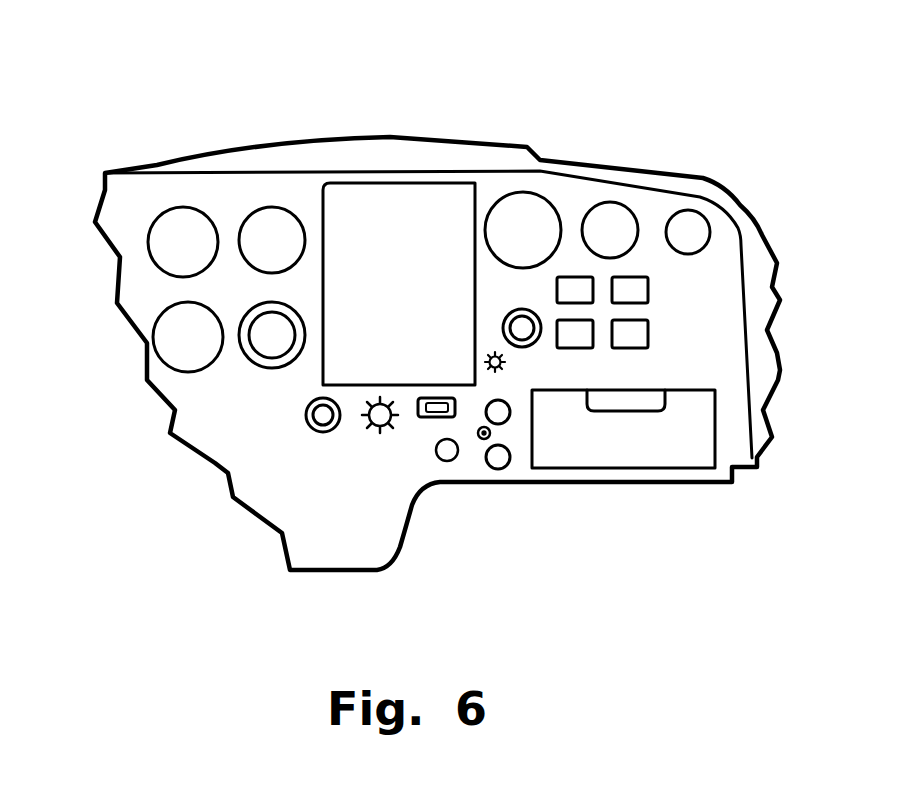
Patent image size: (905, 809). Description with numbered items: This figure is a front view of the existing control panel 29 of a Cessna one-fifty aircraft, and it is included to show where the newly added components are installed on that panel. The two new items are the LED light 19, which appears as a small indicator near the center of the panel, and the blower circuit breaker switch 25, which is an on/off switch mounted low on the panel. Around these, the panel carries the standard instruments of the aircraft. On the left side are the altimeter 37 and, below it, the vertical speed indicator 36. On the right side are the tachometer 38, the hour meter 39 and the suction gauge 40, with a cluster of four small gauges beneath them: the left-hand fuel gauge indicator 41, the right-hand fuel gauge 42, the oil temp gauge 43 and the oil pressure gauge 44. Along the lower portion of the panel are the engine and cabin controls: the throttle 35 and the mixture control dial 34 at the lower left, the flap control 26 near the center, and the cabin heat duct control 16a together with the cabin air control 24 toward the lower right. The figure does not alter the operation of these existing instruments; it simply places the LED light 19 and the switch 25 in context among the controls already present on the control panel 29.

The control panel 29 is at (502, 122).
The altimeter 37 is at (158, 237).
The vertical speed indicator 36 is at (168, 343).
The tachometer 38 is at (547, 203).
The hour meter 39 is at (621, 208).
The suction gauge 40 is at (695, 215).
The left-hand fuel gauge indicator 41 is at (572, 277).
The right-hand fuel gauge 42 is at (648, 288).
The oil temp gauge 43 is at (648, 330).
The oil pressure gauge 44 is at (583, 342).
The LED light 19 is at (487, 358).
The throttle 35 is at (308, 420).
The mixture control dial 34 is at (375, 430).
The flap control 26 is at (428, 417).
The blower circuit breaker switch 25 is at (483, 440).
The cabin heat duct control 16a is at (508, 460).
The cabin air control 24 is at (510, 413).